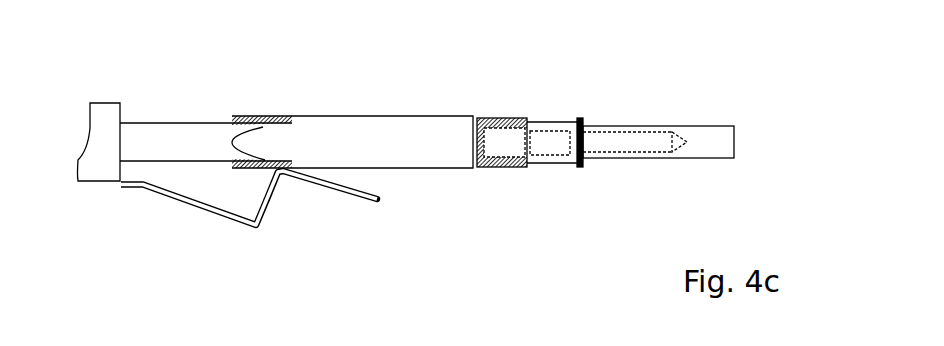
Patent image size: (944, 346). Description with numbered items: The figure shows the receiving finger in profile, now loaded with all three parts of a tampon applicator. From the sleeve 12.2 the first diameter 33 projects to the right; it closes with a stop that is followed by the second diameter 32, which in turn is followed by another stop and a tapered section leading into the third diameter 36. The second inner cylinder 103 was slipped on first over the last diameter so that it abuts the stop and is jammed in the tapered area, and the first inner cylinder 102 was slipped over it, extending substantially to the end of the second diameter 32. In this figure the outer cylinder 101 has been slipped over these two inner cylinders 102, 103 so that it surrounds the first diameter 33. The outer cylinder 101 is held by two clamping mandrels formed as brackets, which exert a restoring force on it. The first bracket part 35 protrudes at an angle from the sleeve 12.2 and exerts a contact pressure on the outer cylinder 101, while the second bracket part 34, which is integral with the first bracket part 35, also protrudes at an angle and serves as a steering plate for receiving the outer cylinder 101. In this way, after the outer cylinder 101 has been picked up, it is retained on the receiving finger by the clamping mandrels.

The sleeve 12.2 is at (103, 136).
The first diameter 33 is at (182, 145).
The outer cylinder 101 is at (369, 117).
The first inner cylinder 102 is at (548, 127).
The second inner cylinder 103 is at (702, 142).
The second diameter 32 is at (547, 155).
The second bracket part 34 is at (330, 190).
The first bracket part 35 is at (177, 202).
The third diameter 36 is at (645, 143).